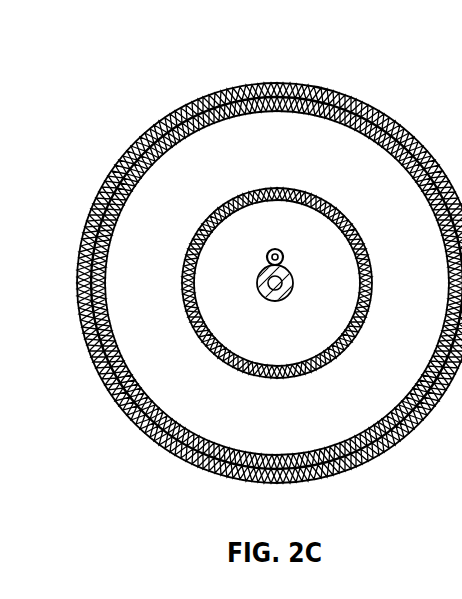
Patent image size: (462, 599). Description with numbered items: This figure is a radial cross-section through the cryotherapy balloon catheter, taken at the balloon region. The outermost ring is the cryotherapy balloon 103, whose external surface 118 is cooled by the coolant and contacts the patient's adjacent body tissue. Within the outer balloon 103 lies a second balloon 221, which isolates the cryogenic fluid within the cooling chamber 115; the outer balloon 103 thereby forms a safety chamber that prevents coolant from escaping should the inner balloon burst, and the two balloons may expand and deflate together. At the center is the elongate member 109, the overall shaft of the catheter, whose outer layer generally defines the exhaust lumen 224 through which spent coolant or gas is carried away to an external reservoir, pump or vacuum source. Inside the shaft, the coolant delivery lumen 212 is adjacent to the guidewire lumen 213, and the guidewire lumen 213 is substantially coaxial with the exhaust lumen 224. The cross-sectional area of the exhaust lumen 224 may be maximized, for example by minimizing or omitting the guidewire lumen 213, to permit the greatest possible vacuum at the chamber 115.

The external surface 118 is at (228, 85).
The cryotherapy balloon 103 is at (160, 130).
The second balloon 221 is at (184, 126).
The cooling chamber 115 is at (165, 291).
The elongate member 109 is at (280, 374).
The exhaust lumen 224 is at (337, 327).
The coolant delivery lumen 212 is at (276, 249).
The guidewire lumen 213 is at (273, 300).